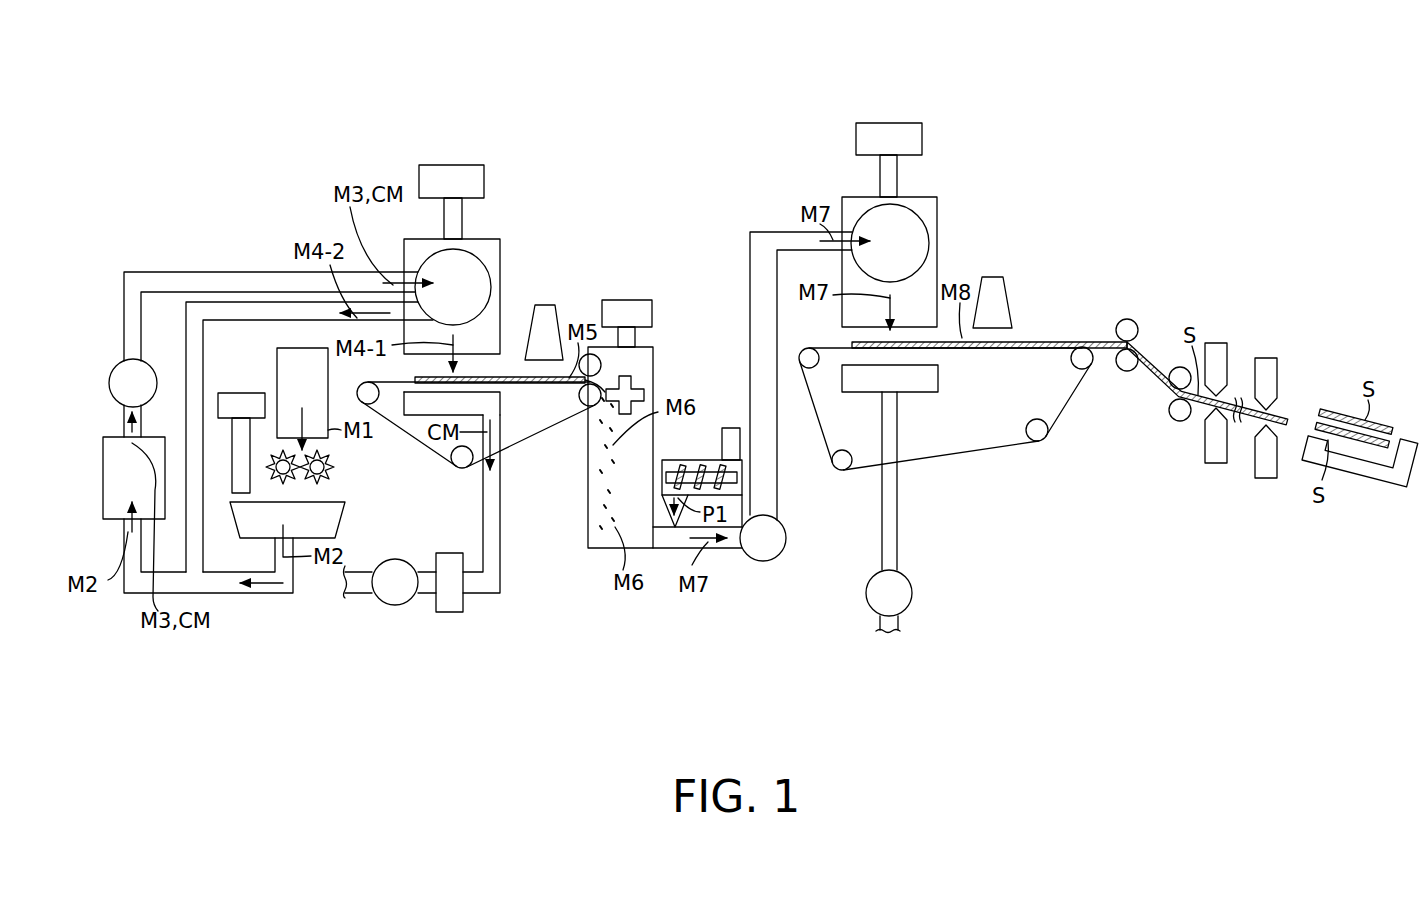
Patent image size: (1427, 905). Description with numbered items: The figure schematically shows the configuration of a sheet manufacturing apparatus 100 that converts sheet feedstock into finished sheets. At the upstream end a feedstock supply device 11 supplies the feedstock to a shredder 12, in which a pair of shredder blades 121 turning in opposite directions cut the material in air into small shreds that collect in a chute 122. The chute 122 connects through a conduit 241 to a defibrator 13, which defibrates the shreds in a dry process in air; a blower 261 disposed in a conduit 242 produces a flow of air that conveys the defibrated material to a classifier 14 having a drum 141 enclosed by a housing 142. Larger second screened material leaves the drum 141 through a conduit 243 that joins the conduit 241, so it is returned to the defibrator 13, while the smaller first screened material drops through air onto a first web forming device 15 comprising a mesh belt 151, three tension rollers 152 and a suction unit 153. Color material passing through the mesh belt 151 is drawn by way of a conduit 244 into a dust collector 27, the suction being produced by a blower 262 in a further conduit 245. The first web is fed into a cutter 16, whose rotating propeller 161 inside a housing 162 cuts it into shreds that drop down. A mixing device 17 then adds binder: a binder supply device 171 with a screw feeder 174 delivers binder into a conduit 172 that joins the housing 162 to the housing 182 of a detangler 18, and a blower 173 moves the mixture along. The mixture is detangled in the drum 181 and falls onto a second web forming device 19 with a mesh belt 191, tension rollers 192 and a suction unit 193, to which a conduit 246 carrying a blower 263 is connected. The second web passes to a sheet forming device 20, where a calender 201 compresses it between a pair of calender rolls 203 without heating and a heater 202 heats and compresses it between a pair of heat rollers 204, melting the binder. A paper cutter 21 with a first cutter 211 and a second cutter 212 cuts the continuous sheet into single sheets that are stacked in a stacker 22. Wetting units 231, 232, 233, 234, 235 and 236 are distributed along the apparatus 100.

The sheet manufacturing apparatus 100 is at (1158, 98).
The feedstock supply device 11 is at (302, 348).
The shredder 12 is at (322, 488).
The shredder blades 121 is at (285, 486).
The chute 122 is at (332, 517).
The defibrator 13 is at (103, 474).
The classifier 14 is at (495, 246).
The drum 141 is at (484, 262).
The housing 142 is at (490, 239).
The first web forming device 15 is at (471, 444).
The mesh belt 151 is at (533, 438).
The tension rollers 152 is at (364, 384).
The suction unit 153 is at (501, 400).
The cutter 16 is at (634, 436).
The propeller 161 is at (645, 386).
The housing 162 is at (604, 550).
The mixing device 17 is at (761, 442).
The binder supply device 171 is at (722, 445).
The conduit 172 is at (778, 502).
The blower 173 is at (774, 558).
The screw feeder 174 is at (678, 470).
The detangler 18 is at (933, 204).
The drum 181 is at (926, 222).
The housing 182 is at (930, 197).
The second web forming device 19 is at (955, 423).
The mesh belt 191 is at (953, 459).
The tension rollers 192 is at (808, 348).
The suction unit 193 is at (940, 378).
The sheet forming device 20 is at (1180, 375).
The calender 201 is at (1127, 307).
The heater 202 is at (1145, 437).
The calender rolls 203 is at (1183, 280).
The heat rollers 204 is at (1177, 380).
The paper cutter 21 is at (1277, 363).
The first cutter 211 is at (1237, 338).
The second cutter 212 is at (1288, 345).
The stacker 22 is at (1375, 470).
The wetting unit 231 is at (233, 393).
The wetting unit 232 is at (455, 165).
The wetting unit 233 is at (627, 300).
The wetting unit 234 is at (897, 123).
The wetting unit 235 is at (552, 305).
The wetting unit 236 is at (995, 277).
The conduit 241 is at (241, 594).
The conduit 242 is at (175, 272).
The conduit 243 is at (258, 302).
The conduit 244 is at (502, 552).
The conduit 245 is at (428, 596).
The conduit 246 is at (900, 548).
The blower 261 is at (117, 366).
The blower 262 is at (390, 606).
The blower 263 is at (913, 595).
The dust collector 27 is at (455, 613).